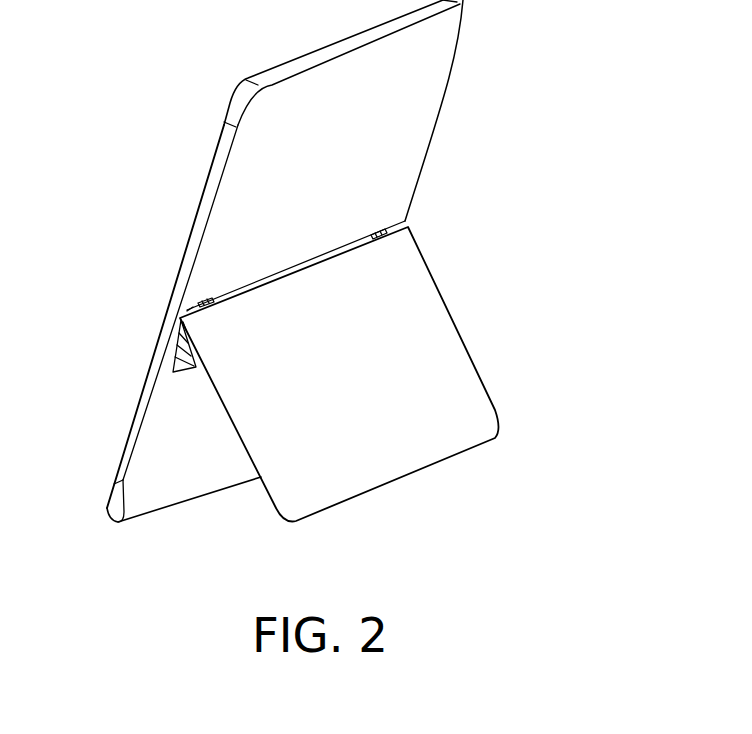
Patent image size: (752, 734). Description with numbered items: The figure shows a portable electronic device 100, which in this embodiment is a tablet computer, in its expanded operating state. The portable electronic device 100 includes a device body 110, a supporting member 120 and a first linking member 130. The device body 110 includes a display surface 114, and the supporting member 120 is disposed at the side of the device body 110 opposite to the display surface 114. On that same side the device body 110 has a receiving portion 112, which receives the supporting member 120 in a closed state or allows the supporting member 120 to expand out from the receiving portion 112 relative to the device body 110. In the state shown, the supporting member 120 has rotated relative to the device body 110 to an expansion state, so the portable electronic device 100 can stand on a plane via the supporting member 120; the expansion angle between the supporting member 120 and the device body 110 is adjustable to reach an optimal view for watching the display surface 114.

The portable electronic device 100 is at (348, 299).
The device body 110 is at (430, 103).
The receiving portion 112 is at (163, 434).
The display surface 114 is at (198, 192).
The supporting member 120 is at (468, 360).
The first linking member 130 is at (175, 342).